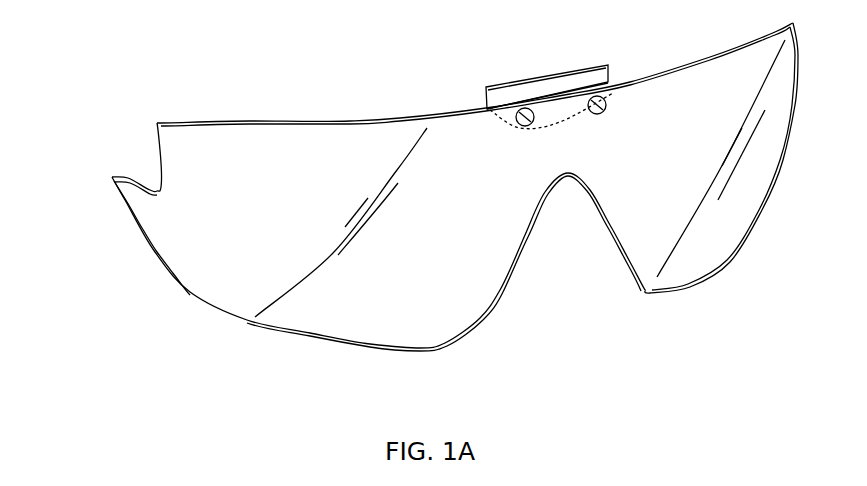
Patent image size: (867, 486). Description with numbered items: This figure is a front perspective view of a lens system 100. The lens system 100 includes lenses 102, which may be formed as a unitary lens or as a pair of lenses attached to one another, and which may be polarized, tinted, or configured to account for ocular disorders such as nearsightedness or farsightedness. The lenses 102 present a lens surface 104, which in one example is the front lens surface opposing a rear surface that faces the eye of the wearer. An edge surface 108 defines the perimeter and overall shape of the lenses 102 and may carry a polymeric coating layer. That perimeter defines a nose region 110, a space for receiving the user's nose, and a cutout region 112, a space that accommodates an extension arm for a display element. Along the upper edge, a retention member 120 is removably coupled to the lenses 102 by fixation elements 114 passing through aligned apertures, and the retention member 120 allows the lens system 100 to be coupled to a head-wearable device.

The lens system 100 is at (275, 373).
The lenses 102 is at (200, 295).
The lens surface 104 is at (253, 303).
The edge surface 108 is at (145, 250).
The nose region 110 is at (583, 250).
The cutout region 112 is at (150, 163).
The fixation element 114 is at (488, 109).
The retention member 120 is at (518, 82).